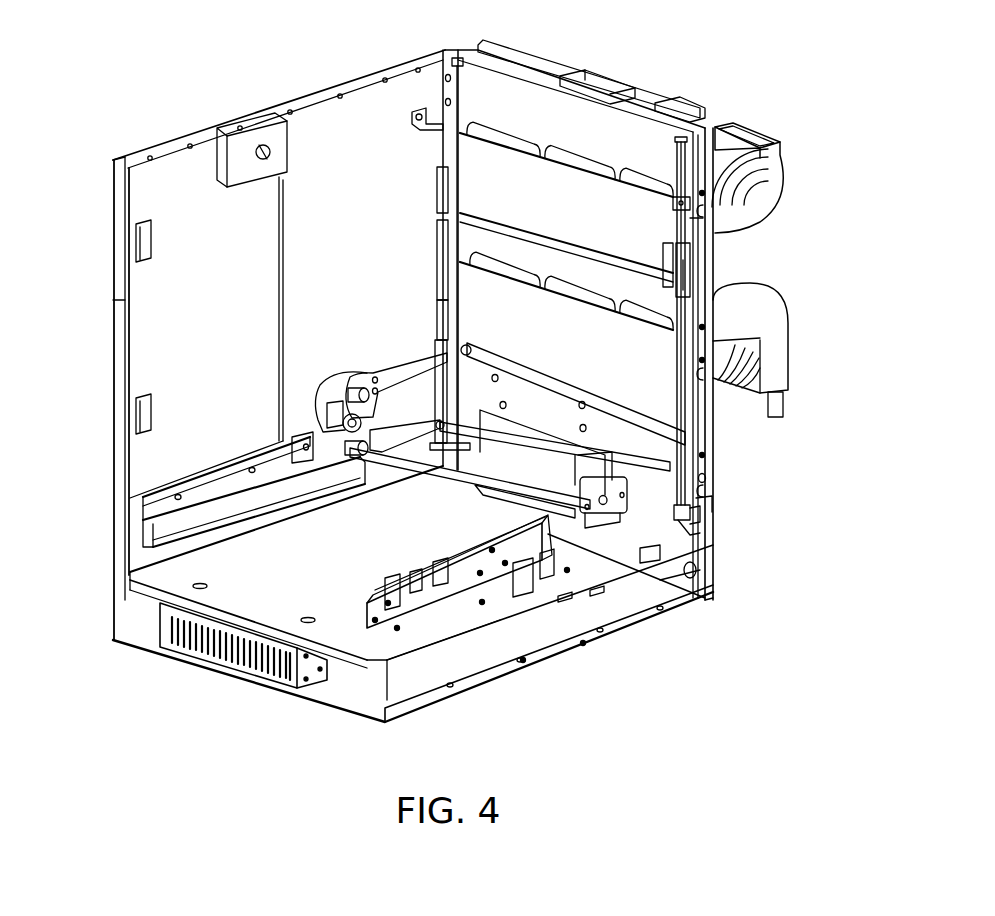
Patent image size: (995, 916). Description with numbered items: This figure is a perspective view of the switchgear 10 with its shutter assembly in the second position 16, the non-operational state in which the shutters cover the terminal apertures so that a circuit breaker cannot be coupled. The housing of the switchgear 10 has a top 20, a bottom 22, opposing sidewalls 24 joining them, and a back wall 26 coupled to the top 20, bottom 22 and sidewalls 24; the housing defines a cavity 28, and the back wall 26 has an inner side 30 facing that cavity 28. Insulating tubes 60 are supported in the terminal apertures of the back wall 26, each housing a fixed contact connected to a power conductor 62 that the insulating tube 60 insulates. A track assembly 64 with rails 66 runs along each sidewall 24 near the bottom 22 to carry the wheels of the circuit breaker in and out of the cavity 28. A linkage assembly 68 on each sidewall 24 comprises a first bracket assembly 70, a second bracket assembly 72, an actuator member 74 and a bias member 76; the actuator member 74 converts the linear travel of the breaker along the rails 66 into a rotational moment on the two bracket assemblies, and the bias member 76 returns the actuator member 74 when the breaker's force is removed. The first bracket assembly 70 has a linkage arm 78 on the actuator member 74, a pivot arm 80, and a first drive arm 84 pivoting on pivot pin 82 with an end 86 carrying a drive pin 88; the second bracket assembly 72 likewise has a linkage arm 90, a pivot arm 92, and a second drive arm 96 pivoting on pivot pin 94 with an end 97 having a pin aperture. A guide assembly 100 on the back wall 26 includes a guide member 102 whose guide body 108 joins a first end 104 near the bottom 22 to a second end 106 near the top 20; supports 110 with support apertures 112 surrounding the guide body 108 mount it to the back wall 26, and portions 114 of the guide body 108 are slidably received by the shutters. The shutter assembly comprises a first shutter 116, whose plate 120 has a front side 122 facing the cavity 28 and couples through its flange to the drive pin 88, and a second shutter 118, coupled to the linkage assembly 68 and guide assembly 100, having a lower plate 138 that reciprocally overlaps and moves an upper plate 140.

The switchgear 10 is at (98, 168).
The second position 16 is at (735, 468).
The top 20 is at (712, 140).
The bottom 22 is at (160, 660).
The sidewalls 24 is at (310, 108).
The back wall 26 is at (485, 65).
The cavity 28 is at (204, 282).
The inner side 30 is at (528, 90).
The insulating tube 60 is at (735, 292).
The power conductor 62 is at (783, 176).
The track assembly 64 is at (205, 462).
The rails 66 is at (145, 527).
The linkage assembly 68 is at (343, 335).
The first bracket assembly 70 is at (330, 372).
The second bracket assembly 72 is at (616, 556).
The actuator member 74 is at (310, 435).
The bias member 76 is at (326, 374).
The linkage arm 78 is at (352, 378).
The pivot arm 80 is at (422, 345).
The pivot pin 82 is at (470, 349).
The first drive arm 84 is at (440, 320).
The end 86 is at (445, 290).
The drive pin 88 is at (450, 240).
The linkage arm 90 is at (608, 545).
The pivot arm 92 is at (652, 562).
The pivot pin 94 is at (710, 520).
The second drive arm 96 is at (712, 480).
The end 97 is at (685, 268).
The guide assembly 100 is at (435, 76).
The guide member 102 is at (455, 58).
The first end 104 is at (690, 555).
The second end 106 is at (688, 130).
The guide body 108 is at (688, 160).
The supports 110 is at (700, 525).
The support aperture 112 is at (690, 538).
The portions 114 is at (700, 580).
The first shutter 116 is at (668, 358).
The second shutter 118 is at (660, 228).
The plate 120 is at (712, 418).
The front side 122 is at (768, 438).
The lower plate 138 is at (610, 215).
The upper plate 140 is at (560, 175).